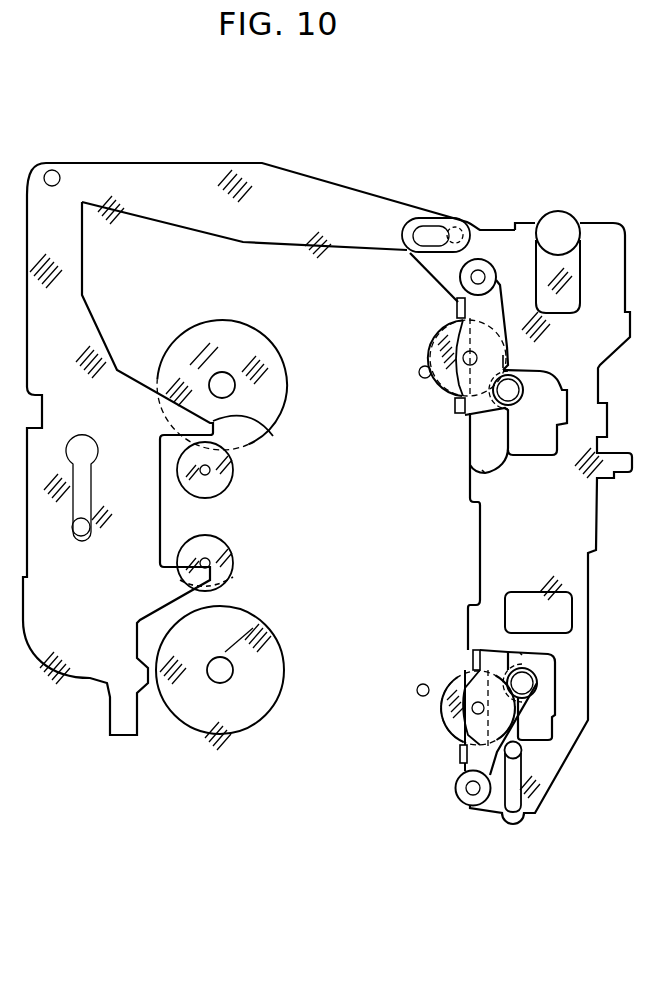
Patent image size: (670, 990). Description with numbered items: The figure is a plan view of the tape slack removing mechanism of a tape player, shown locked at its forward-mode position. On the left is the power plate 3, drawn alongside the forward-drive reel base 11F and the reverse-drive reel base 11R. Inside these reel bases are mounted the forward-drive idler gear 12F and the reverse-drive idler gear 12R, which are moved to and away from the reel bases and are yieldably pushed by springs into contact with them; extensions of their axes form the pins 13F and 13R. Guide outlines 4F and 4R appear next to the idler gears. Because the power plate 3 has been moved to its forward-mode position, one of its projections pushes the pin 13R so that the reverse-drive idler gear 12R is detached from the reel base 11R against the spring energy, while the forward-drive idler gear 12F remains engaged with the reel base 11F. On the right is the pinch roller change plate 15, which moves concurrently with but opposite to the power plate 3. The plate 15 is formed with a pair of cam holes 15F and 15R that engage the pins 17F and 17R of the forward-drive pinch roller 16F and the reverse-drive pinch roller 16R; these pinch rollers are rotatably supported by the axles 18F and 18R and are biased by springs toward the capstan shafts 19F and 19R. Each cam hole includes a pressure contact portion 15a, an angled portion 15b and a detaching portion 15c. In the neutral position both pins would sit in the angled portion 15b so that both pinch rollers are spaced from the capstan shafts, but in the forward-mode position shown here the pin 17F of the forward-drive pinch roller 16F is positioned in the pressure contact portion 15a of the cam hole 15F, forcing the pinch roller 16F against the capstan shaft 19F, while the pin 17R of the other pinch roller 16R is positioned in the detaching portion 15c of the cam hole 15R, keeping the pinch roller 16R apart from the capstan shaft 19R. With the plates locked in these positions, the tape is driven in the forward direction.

The power plate 3 is at (88, 322).
The forward-drive reel base 11F is at (262, 343).
The reverse-drive reel base 11R is at (267, 643).
The front guide 4F is at (260, 432).
The rear guide 4R is at (227, 580).
The forward-drive idler gear 12F is at (233, 467).
The reverse-drive idler gear 12R is at (218, 542).
The pin 13F is at (209, 474).
The pin 13R is at (210, 563).
The pinch roller change plate 15 is at (488, 547).
The pressure contact portion 15a is at (507, 353).
The angled portion 15b is at (493, 407).
The detaching portion 15c is at (510, 447).
The cam hole 15F is at (557, 403).
The cam hole 15R is at (552, 690).
The forward-drive pinch roller 16F is at (445, 338).
The reverse-drive pinch roller 16R is at (448, 720).
The pin 17F is at (515, 397).
The pin 17R is at (528, 687).
The axle 18F is at (463, 277).
The axle 18R is at (472, 788).
The capstan shaft 19F is at (420, 372).
The capstan shaft 19R is at (417, 688).